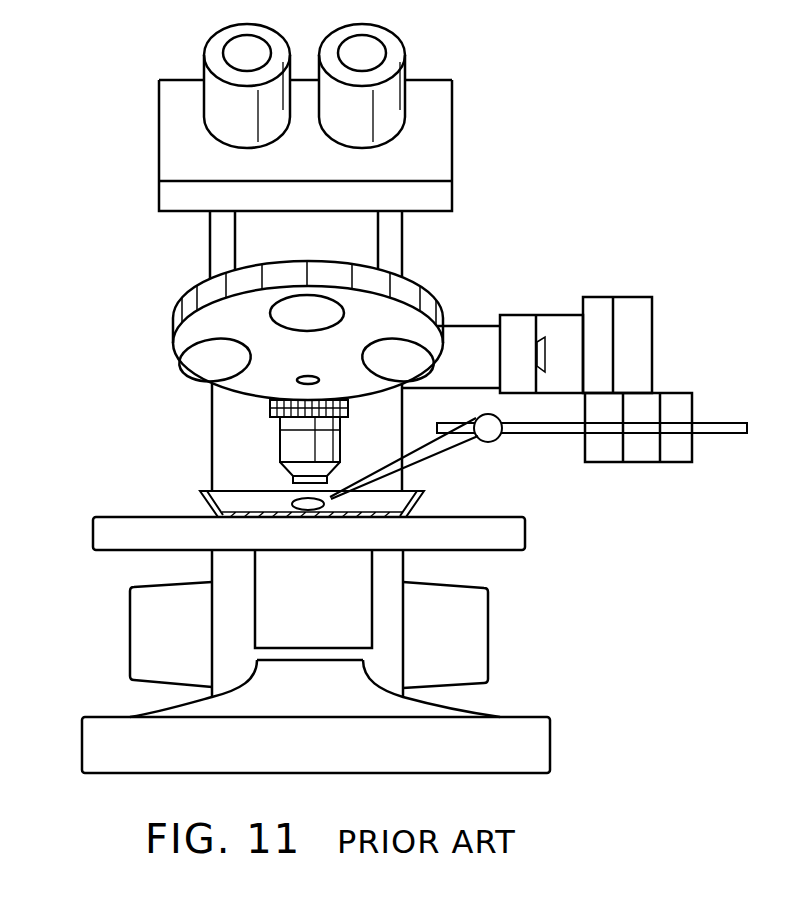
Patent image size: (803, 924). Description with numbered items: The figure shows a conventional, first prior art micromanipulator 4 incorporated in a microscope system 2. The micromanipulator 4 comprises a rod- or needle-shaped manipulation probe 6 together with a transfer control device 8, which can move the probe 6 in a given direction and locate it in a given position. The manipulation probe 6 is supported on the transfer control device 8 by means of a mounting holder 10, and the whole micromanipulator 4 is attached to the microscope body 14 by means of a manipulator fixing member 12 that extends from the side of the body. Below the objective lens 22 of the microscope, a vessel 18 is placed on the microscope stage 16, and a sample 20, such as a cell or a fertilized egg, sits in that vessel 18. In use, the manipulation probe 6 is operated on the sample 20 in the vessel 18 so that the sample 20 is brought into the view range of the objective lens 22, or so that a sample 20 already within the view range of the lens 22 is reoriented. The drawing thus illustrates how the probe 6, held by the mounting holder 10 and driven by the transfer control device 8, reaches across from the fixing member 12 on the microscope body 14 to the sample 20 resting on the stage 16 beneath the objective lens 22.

The microscope system 2 is at (122, 213).
The micromanipulator 4 is at (579, 258).
The manipulation probe 6 is at (444, 456).
The transfer control device 8 is at (653, 358).
The mounting holder 10 is at (556, 436).
The manipulator fixing member 12 is at (472, 324).
The microscope body 14 is at (210, 252).
The microscope stage 16 is at (92, 530).
The vessel 18 is at (199, 497).
The sample 20 is at (294, 501).
The objective lens 22 is at (281, 440).